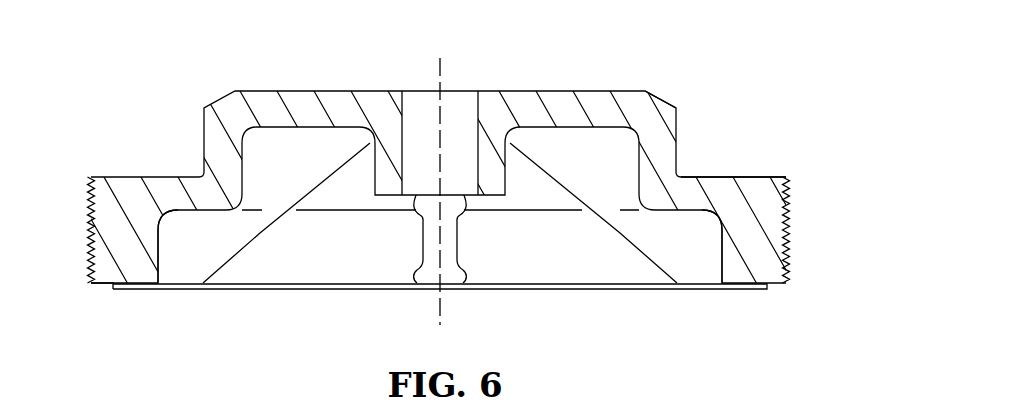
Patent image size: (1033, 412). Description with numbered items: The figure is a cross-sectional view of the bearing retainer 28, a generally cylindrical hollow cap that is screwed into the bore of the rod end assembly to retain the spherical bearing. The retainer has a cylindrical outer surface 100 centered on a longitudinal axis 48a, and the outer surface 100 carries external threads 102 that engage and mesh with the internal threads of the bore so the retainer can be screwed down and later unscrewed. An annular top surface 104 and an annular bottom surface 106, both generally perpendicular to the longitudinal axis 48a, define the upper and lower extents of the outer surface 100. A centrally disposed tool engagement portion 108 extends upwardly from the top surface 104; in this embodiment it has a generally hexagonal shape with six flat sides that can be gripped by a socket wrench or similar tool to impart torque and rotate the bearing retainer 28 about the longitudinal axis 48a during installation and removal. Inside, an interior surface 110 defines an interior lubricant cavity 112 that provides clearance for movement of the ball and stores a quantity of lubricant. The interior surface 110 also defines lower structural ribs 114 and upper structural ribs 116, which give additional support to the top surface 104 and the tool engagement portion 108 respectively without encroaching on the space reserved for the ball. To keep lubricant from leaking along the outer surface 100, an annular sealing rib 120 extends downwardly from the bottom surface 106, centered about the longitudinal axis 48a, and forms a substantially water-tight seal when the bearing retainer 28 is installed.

The bearing retainer 28 is at (593, 68).
The longitudinal axis 48a is at (442, 80).
The cylindrical outer surface 100 is at (789, 285).
The external threads 102 is at (788, 235).
The annular top surface 104 is at (748, 177).
The annular bottom surface 106 is at (105, 287).
The tool engagement portion 108 is at (667, 105).
The interior surface 110 is at (722, 252).
The lubricant cavity 112 is at (303, 243).
The lower structural ribs 114 is at (232, 258).
The upper structural ribs 116 is at (334, 172).
The annular sealing rib 120 is at (725, 288).